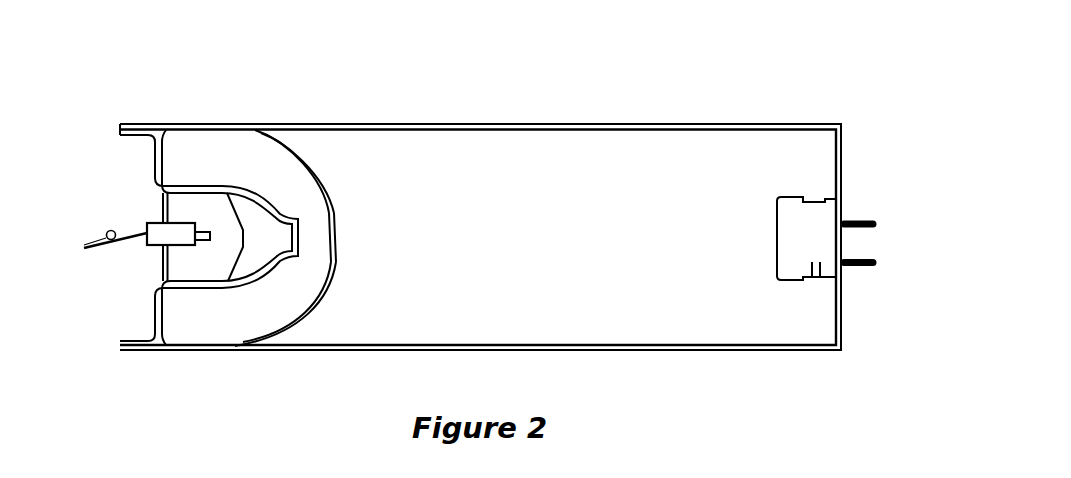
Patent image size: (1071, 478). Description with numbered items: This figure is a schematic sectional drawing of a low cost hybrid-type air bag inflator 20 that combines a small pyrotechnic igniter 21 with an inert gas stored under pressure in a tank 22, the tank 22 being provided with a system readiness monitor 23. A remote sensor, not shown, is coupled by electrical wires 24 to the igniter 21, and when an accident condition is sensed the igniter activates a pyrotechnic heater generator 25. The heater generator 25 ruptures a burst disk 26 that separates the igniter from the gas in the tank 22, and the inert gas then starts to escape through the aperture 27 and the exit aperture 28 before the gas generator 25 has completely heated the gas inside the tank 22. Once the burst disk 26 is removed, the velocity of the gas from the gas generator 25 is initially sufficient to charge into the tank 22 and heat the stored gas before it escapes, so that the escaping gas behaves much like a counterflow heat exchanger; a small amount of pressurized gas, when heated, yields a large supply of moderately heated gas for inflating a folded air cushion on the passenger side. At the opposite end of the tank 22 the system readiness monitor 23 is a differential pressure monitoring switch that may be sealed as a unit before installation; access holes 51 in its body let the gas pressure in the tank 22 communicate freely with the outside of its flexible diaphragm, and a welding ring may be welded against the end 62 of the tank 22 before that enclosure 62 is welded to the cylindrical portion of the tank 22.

The hybrid-type air bag inflator 20 is at (480, 181).
The pyrotechnic igniter 21 is at (223, 238).
The tank 22 is at (528, 125).
The system readiness monitor 23 is at (775, 218).
The electrical wires 24 is at (110, 243).
The pyrotechnic heater generator 25 is at (262, 240).
The burst disk 26 is at (338, 236).
The aperture 27 is at (338, 260).
The exit aperture 28 is at (197, 125).
The access holes 51 is at (812, 282).
The end of the tank 62 is at (842, 172).